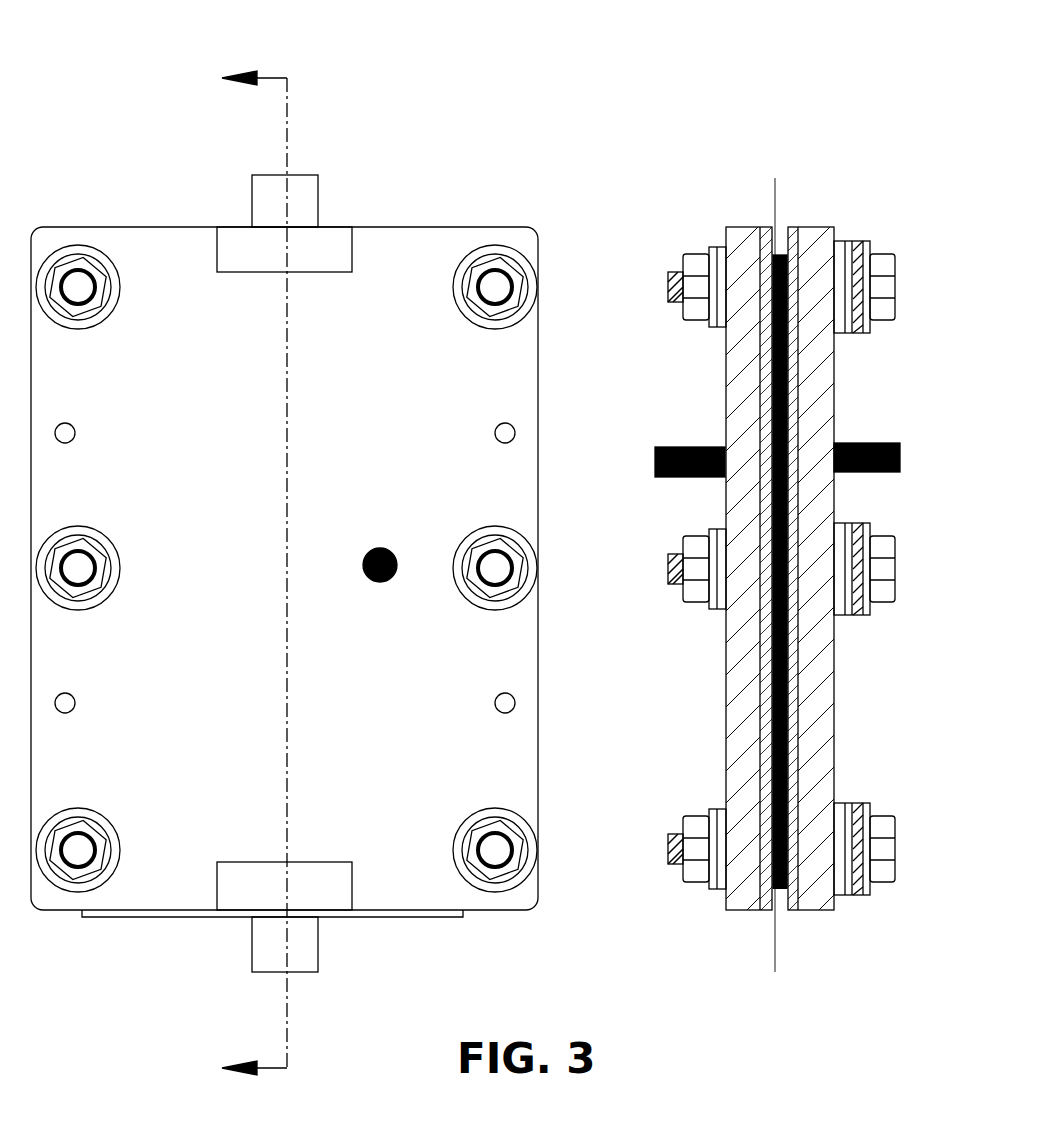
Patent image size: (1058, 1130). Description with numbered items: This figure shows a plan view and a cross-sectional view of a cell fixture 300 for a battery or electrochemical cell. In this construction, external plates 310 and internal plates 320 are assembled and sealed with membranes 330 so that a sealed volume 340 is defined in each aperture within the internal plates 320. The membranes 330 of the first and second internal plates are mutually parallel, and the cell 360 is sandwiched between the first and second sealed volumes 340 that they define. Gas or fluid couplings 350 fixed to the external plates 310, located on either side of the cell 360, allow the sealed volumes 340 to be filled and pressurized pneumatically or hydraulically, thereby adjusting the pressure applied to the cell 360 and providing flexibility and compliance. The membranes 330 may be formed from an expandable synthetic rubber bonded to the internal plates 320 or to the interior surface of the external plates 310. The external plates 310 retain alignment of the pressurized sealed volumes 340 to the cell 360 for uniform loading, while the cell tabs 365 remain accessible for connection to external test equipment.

The cell fixture 300 is at (475, 150).
The external plates 310 is at (736, 227).
The internal plates 320 is at (758, 912).
The membranes 330 is at (793, 237).
The sealed volume 340 is at (800, 342).
The gas or fluid couplings 350 is at (668, 448).
The cell 360 is at (778, 890).
The cell tabs 365 is at (773, 178).